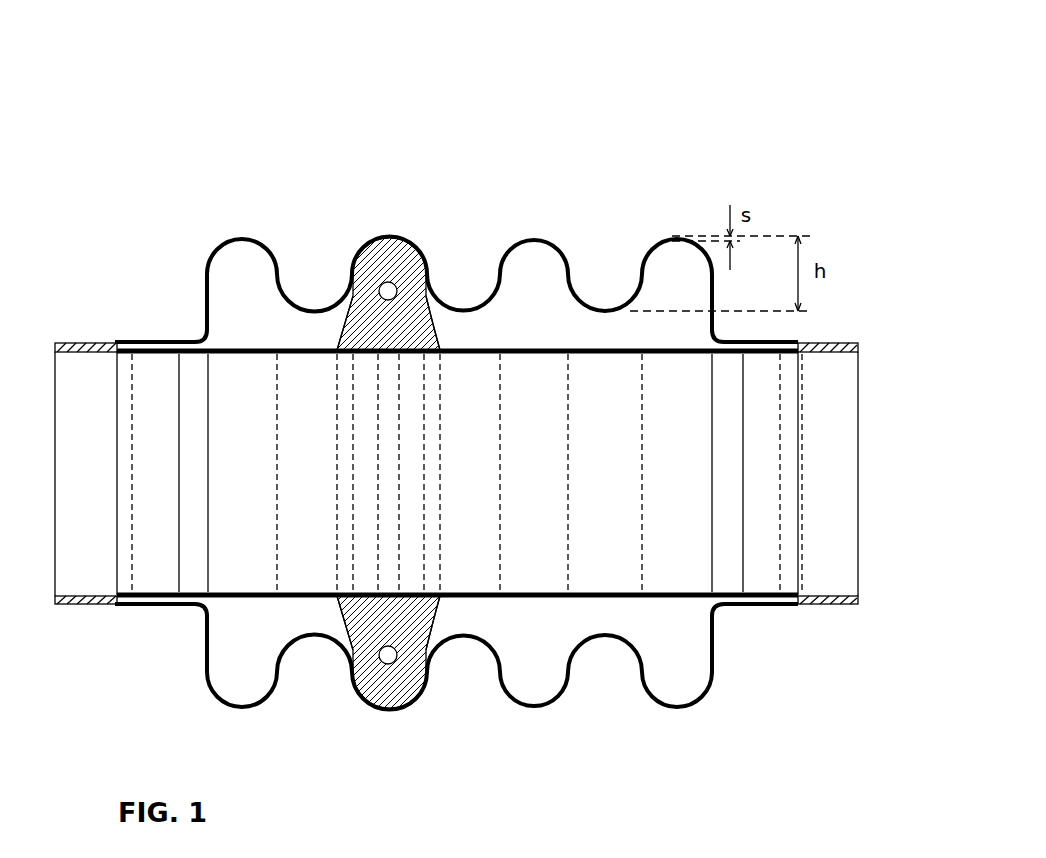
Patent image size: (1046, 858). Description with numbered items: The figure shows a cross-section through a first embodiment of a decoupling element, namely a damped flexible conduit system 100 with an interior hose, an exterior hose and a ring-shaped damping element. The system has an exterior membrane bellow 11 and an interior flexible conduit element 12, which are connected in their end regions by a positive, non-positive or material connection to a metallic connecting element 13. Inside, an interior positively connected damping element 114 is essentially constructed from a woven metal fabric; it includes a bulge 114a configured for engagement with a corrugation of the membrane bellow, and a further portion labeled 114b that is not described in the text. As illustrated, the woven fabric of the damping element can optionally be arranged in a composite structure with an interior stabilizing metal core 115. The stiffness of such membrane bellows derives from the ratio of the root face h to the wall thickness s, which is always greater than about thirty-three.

The damped flexible conduit system 100 is at (622, 65).
The exterior membrane bellow 11 is at (243, 237).
The damping element 114 is at (320, 77).
The bulge 114a is at (394, 241).
The filler / base portion of reinforced convolution 114b is at (360, 332).
The interior stabilizing metal core 115 is at (391, 287).
The interior flexible conduit element 12 is at (589, 349).
The metallic connecting element 13 is at (73, 345).